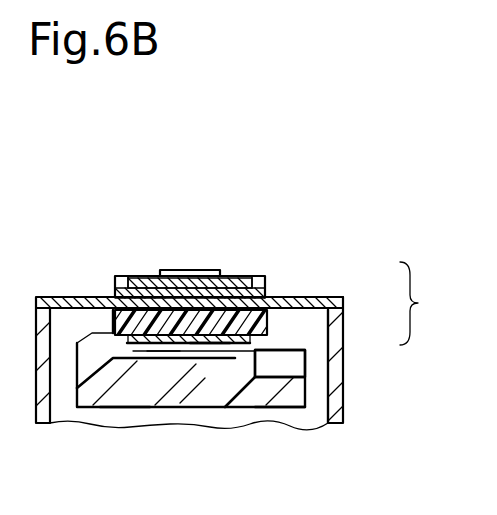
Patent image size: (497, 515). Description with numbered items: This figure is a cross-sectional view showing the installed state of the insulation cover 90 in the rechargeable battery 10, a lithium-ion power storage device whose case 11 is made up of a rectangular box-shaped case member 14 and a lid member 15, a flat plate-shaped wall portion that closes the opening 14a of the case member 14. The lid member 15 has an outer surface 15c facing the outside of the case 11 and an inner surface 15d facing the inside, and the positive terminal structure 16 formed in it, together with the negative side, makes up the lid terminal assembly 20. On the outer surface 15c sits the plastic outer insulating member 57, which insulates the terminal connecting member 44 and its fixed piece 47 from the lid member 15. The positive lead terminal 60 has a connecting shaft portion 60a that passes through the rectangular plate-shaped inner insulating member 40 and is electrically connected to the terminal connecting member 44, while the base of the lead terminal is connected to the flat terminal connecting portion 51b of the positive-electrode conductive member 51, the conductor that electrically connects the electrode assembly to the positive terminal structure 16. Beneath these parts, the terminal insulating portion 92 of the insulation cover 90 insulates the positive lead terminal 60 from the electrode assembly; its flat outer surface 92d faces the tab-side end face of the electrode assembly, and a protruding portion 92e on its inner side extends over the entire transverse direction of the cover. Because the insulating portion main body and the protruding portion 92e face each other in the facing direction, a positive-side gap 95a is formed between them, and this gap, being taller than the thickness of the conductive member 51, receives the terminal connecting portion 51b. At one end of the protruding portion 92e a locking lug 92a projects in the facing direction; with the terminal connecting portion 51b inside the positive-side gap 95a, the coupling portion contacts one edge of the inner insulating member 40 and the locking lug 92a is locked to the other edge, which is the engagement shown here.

The rechargeable battery 10 is at (310, 162).
The case 11 is at (423, 303).
The case member 14 is at (344, 326).
The opening 14a is at (331, 345).
The lid member 15 is at (350, 302).
The outer surface 15c is at (340, 297).
The inner surface 15d is at (317, 308).
The positive terminal structure 16 is at (272, 240).
The lid terminal assembly 20 is at (67, 409).
The inner insulating member 40 is at (268, 313).
The terminal connecting member 44 is at (140, 280).
The fixed piece 47 is at (150, 278).
The positive-electrode conductive member 51 is at (248, 340).
The terminal connecting portion 51b is at (204, 340).
The outer insulating member 57 is at (122, 276).
The positive lead terminal 60 is at (206, 270).
The connecting shaft portion 60a is at (191, 268).
The insulation cover 90 is at (76, 364).
The terminal insulating portion 92 is at (270, 402).
The locking lug 92a is at (108, 332).
The outer surface 92d is at (122, 407).
The protruding portion 92e is at (175, 400).
The positive-side gap 95a is at (157, 352).